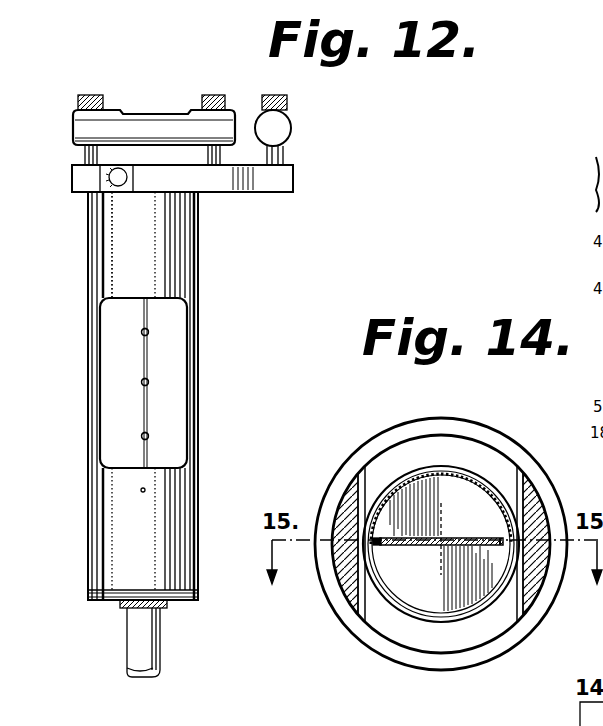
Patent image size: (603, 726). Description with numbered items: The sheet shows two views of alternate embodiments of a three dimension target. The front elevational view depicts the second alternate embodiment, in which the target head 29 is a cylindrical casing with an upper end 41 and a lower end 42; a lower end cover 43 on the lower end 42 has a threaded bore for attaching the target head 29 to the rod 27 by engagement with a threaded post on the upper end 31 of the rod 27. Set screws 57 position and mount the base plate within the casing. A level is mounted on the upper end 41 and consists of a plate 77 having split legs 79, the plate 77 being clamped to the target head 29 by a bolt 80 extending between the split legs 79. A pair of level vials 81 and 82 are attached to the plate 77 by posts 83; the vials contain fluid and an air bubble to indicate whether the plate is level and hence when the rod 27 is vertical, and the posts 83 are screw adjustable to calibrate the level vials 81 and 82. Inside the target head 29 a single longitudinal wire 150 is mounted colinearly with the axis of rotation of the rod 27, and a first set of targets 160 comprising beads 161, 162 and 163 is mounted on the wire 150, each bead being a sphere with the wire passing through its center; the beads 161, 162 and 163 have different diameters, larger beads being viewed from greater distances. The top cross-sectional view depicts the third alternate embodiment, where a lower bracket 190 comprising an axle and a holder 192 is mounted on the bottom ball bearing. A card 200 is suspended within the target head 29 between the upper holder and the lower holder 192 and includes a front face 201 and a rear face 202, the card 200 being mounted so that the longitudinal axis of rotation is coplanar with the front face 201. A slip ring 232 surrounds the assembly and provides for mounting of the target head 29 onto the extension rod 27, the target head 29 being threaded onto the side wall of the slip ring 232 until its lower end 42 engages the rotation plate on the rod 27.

In FIG. 12, the rod 27 is at (127, 655).
In FIG. 12, the target head 29 is at (199, 275).
In FIG. 14, the target head 29 is at (346, 597).
In FIG. 12, the upper end of rod 31 is at (160, 626).
In FIG. 12, the upper end 41 is at (199, 212).
In FIG. 12, the lower end 42 is at (88, 565).
In FIG. 12, the lower end cover 43 is at (88, 597).
In FIG. 12, the set screws 57 is at (144, 273).
In FIG. 12, the plate 77 is at (293, 193).
In FIG. 12, the split legs 79 is at (73, 178).
In FIG. 12, the bolt 80 is at (128, 177).
In FIG. 12, the level vial 81 is at (291, 128).
In FIG. 12, the level vial 82 is at (73, 125).
In FIG. 12, the posts 83 is at (93, 95).
In FIG. 12, the longitudinal wire 150 is at (145, 318).
In FIG. 12, the first set of targets 160 is at (141, 333).
In FIG. 12, the bead 161 is at (149, 440).
In FIG. 12, the bead 162 is at (146, 385).
In FIG. 12, the bead 163 is at (149, 332).
In FIG. 14, the lower bracket 190 is at (450, 478).
In FIG. 14, the holder 192 is at (453, 616).
In FIG. 14, the card 200 is at (385, 547).
In FIG. 14, the front face 201 is at (490, 546).
In FIG. 14, the rear face 202 is at (466, 537).
In FIG. 14, the slip ring 232 is at (458, 671).